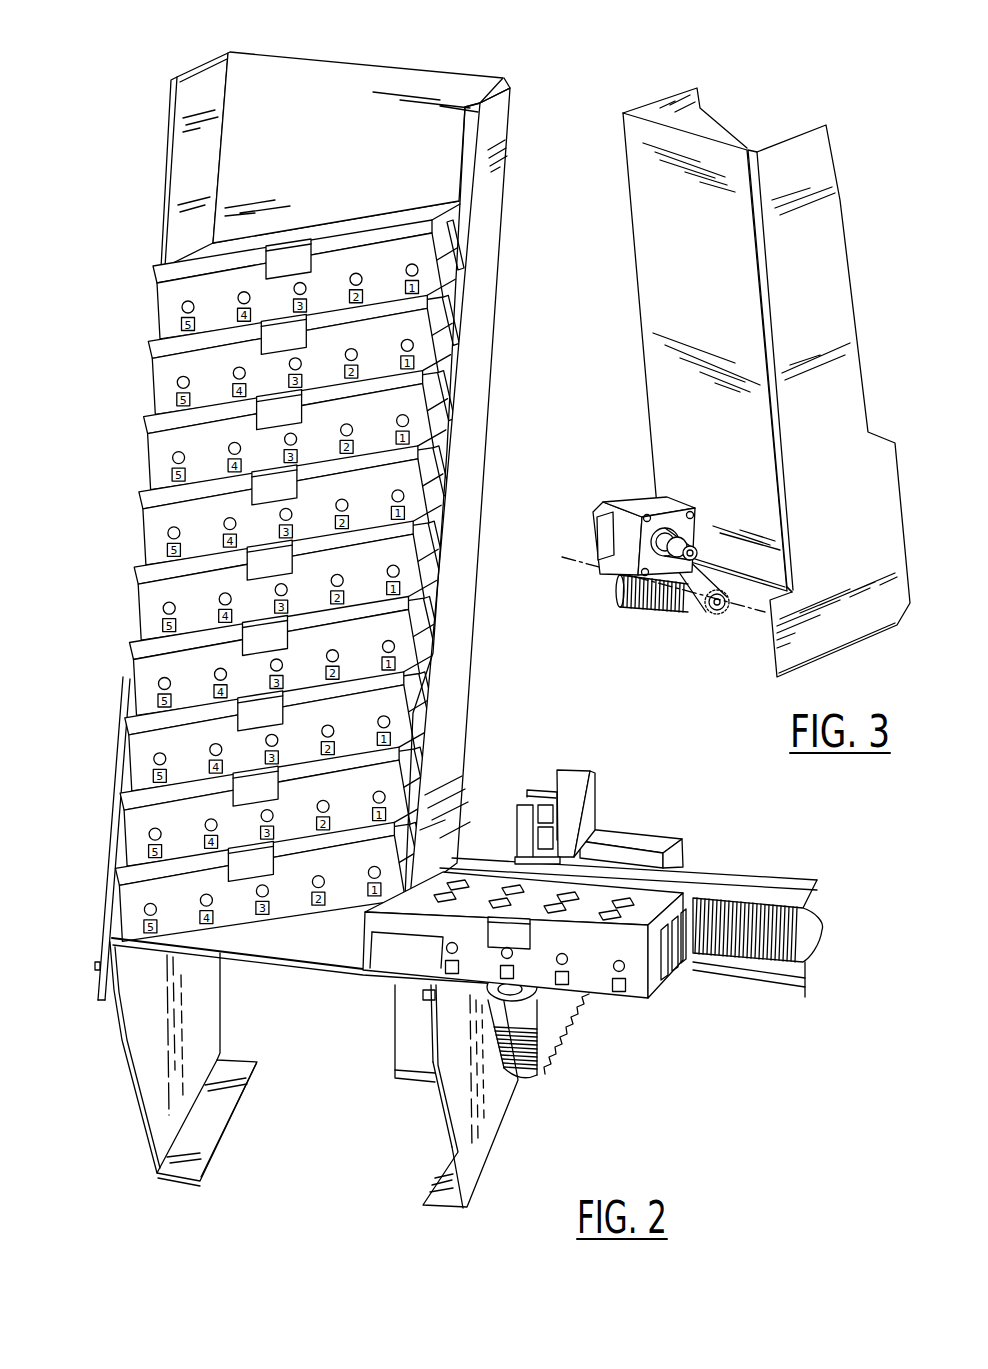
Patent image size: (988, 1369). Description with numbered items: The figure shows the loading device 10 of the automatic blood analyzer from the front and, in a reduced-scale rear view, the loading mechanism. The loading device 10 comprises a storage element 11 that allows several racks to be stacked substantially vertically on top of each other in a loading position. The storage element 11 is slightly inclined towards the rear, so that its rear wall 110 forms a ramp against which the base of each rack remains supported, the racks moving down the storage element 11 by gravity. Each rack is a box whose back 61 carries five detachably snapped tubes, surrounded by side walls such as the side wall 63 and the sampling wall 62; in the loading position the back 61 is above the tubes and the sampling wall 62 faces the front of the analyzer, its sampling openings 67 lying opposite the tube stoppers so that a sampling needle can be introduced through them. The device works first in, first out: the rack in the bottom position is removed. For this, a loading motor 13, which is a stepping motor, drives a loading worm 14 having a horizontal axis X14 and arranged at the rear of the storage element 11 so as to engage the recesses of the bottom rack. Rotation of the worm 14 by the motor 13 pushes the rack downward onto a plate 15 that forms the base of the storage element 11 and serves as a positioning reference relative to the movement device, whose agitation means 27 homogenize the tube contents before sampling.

In FIG. 2, the loading device 10 is at (194, 53).
In FIG. 2, the rear wall 110 is at (362, 156).
In FIG. 3, the rear wall 110 is at (711, 243).
In FIG. 2, the storage element 11 is at (484, 356).
In FIG. 3, the storage element 11 is at (812, 232).
In FIG. 2, the plate 15 is at (330, 941).
In FIG. 2, the back 61 is at (490, 885).
In FIG. 2, the agitation means 27 is at (652, 815).
In FIG. 2, the side wall 63 is at (657, 983).
In FIG. 2, the sampling wall 62 is at (593, 980).
In FIG. 2, the sampling openings 67 is at (626, 972).
In FIG. 3, the loading motor 13 is at (641, 501).
In FIG. 3, the loading worm 14 is at (646, 608).
In FIG. 3, the axis of the worm X14 is at (573, 563).